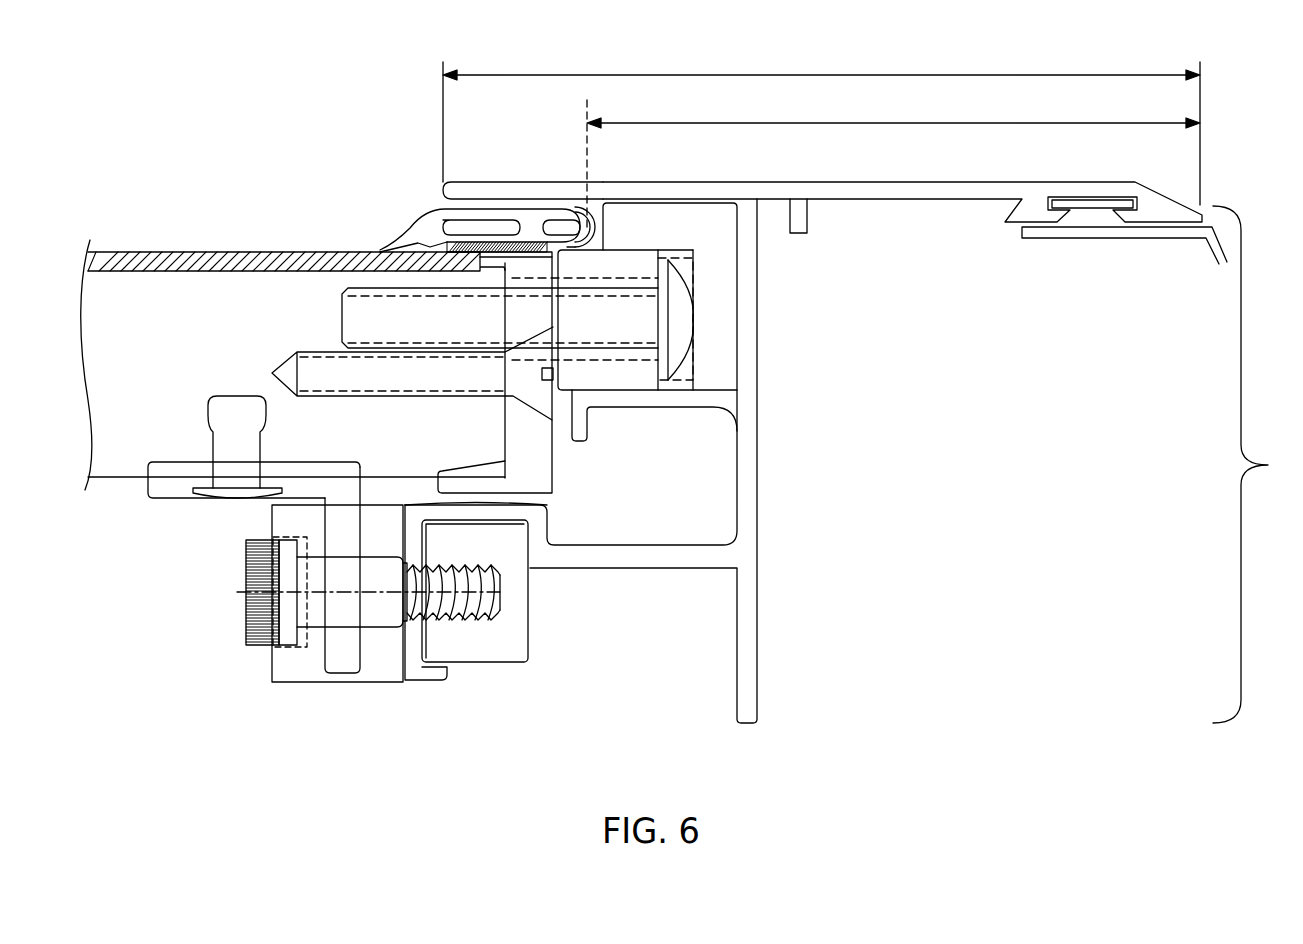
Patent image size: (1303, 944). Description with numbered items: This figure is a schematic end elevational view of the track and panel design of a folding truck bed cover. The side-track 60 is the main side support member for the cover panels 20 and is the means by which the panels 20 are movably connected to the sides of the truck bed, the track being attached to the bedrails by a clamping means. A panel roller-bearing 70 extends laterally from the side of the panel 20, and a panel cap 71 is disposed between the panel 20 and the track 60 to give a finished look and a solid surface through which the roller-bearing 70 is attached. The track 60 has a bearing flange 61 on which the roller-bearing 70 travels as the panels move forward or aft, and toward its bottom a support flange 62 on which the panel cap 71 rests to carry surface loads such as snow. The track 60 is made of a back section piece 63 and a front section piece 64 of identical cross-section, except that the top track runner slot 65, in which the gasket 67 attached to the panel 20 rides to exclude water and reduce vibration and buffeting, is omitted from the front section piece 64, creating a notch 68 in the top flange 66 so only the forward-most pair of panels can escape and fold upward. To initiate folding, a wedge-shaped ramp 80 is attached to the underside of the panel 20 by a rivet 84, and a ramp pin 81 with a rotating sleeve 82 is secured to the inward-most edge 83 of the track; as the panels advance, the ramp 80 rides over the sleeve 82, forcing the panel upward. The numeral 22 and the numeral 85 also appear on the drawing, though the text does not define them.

The cover panel 20 is at (122, 310).
The panel facing layer 22 is at (232, 251).
The side-track 60 is at (851, 461).
The bearing flange 61 is at (711, 403).
The support flange 62 is at (498, 510).
The back section piece 63 is at (888, 72).
The front section piece 64 is at (690, 123).
The top track runner slot 65 is at (517, 200).
The top flange 66 is at (912, 188).
The gasket 67 is at (415, 240).
The notch 68 is at (598, 215).
The panel roller-bearing 70 is at (683, 314).
The panel cap 71 is at (545, 479).
The ramp 80 is at (347, 670).
The ramp pin 81 is at (255, 622).
The rotating sleeve 82 is at (299, 670).
The inward-most edge 83 is at (487, 670).
The rivet 84 is at (220, 418).
The retaining plate 85 is at (415, 670).